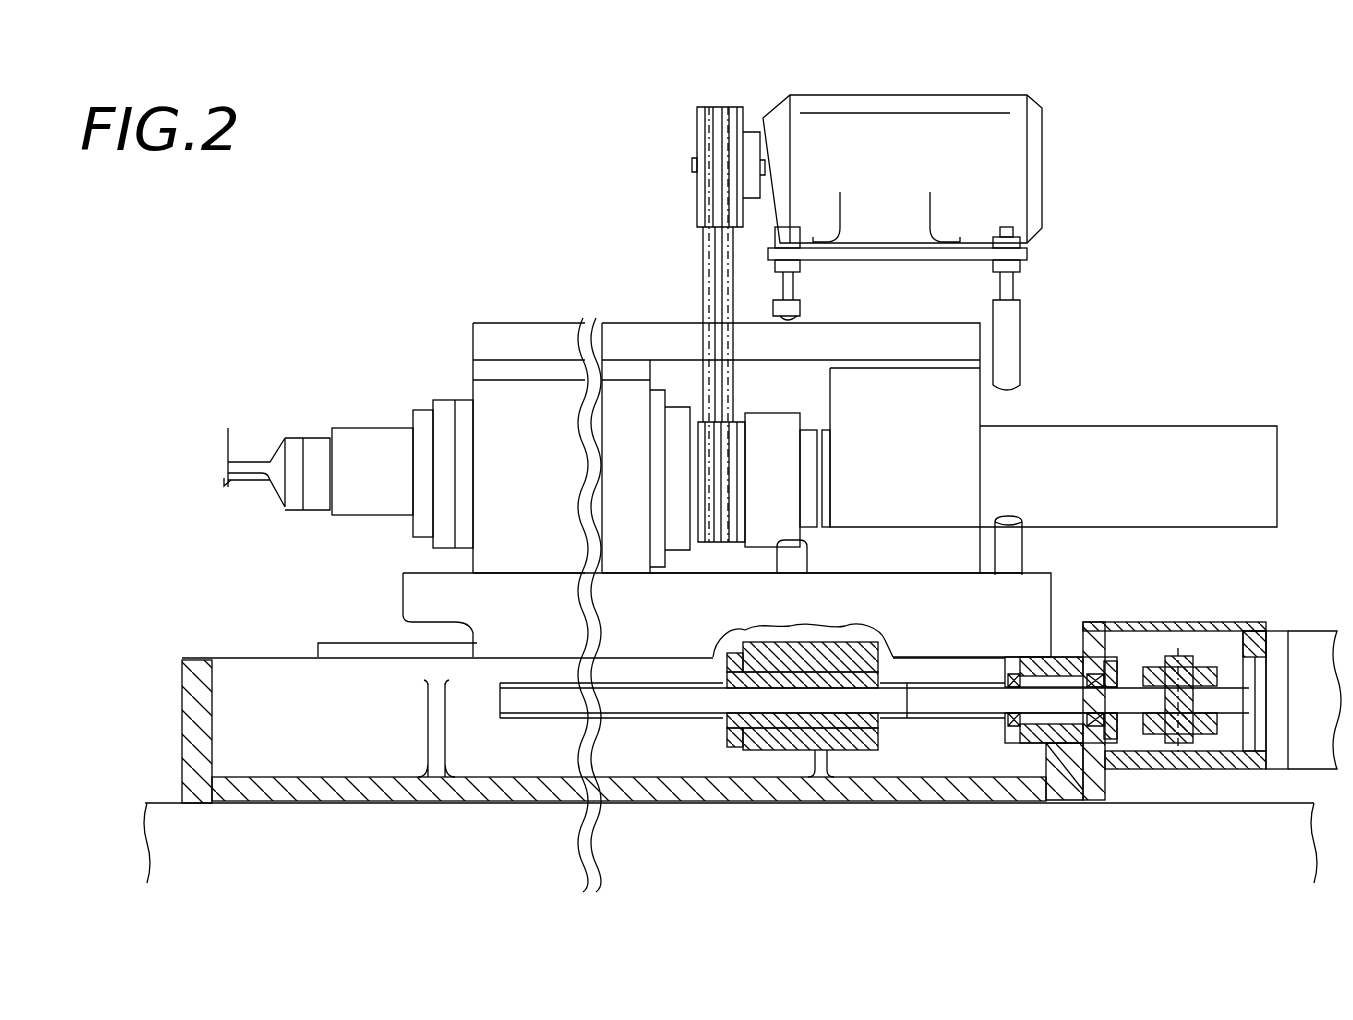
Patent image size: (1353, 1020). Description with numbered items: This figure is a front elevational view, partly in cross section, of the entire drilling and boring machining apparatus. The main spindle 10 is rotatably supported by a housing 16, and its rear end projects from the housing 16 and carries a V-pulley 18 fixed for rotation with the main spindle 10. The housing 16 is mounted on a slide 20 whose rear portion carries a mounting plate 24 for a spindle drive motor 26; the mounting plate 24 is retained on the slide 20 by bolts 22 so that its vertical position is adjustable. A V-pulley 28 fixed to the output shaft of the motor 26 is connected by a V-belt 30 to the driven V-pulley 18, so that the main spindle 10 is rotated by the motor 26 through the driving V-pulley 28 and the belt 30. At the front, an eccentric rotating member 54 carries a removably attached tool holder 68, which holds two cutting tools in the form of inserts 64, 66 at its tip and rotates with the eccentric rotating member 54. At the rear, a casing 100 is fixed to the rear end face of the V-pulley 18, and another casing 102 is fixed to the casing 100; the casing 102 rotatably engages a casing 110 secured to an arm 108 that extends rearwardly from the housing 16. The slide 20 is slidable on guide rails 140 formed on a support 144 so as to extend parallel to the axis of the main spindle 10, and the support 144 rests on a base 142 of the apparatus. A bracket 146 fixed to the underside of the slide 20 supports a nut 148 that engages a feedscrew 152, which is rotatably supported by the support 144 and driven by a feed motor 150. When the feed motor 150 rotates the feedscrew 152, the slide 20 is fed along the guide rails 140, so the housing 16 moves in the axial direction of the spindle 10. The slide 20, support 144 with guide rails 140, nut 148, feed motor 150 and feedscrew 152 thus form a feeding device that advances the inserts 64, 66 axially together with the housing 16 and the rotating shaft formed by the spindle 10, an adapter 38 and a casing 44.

The main spindle 10 is at (693, 457).
The housing 16 is at (497, 397).
The V-pulley 18 is at (718, 540).
The slide 20 is at (1036, 596).
The bolts 22 is at (803, 306).
The mounting plate 24 is at (1012, 257).
The spindle drive motor 26 is at (1005, 130).
The V-pulley 28 is at (740, 112).
The V-belt 30 is at (705, 250).
The adapter 38 is at (445, 413).
The casing 44 is at (370, 447).
The eccentric rotating member 54 is at (318, 455).
The insert 64 is at (228, 487).
The insert 66 is at (237, 438).
The tool holder 68 is at (293, 498).
The casing 100 is at (773, 437).
The casing 102 is at (807, 517).
The arm 108 is at (543, 337).
The casing 110 is at (897, 507).
The guide rails 140 is at (340, 647).
The base 142 is at (163, 823).
The support 144 is at (190, 713).
The bracket 146 is at (862, 733).
The nut 148 is at (728, 723).
The feed motor 150 is at (1307, 654).
The feedscrew 152 is at (527, 703).